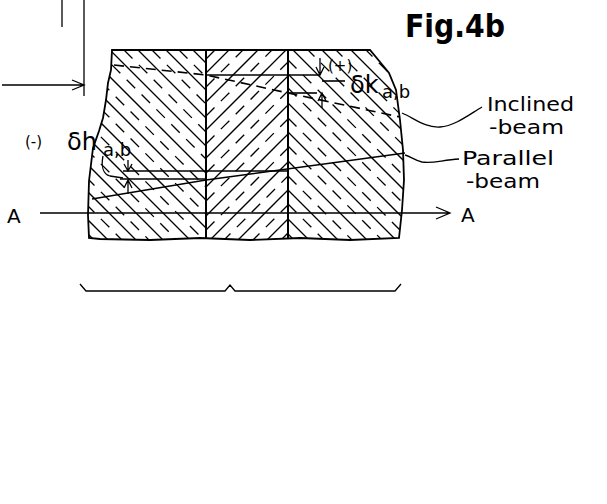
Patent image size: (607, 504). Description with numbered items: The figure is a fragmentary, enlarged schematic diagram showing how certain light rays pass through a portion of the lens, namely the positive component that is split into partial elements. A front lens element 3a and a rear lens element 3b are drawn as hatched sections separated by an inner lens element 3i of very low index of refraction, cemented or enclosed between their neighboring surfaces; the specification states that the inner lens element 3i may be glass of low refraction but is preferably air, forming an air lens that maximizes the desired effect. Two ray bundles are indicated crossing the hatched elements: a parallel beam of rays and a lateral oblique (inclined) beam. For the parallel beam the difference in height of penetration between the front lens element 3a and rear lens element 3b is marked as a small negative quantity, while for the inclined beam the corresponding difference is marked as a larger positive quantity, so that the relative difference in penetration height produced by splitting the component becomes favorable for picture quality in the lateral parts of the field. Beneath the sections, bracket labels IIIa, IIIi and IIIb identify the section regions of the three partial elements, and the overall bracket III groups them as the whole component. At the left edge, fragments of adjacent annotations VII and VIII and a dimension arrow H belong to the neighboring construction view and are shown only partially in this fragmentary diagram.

The front lens element 3a is at (146, 130).
The inner lens element 3i is at (247, 130).
The rear lens element 3b is at (348, 130).
The section plane IIIa is at (163, 231).
The section plane IIIi is at (254, 229).
The section plane IIIb is at (352, 229).
The section III is at (239, 320).
The section VII is at (36, 13).
The section VIII is at (76, 55).
The height dimension H is at (5, 93).